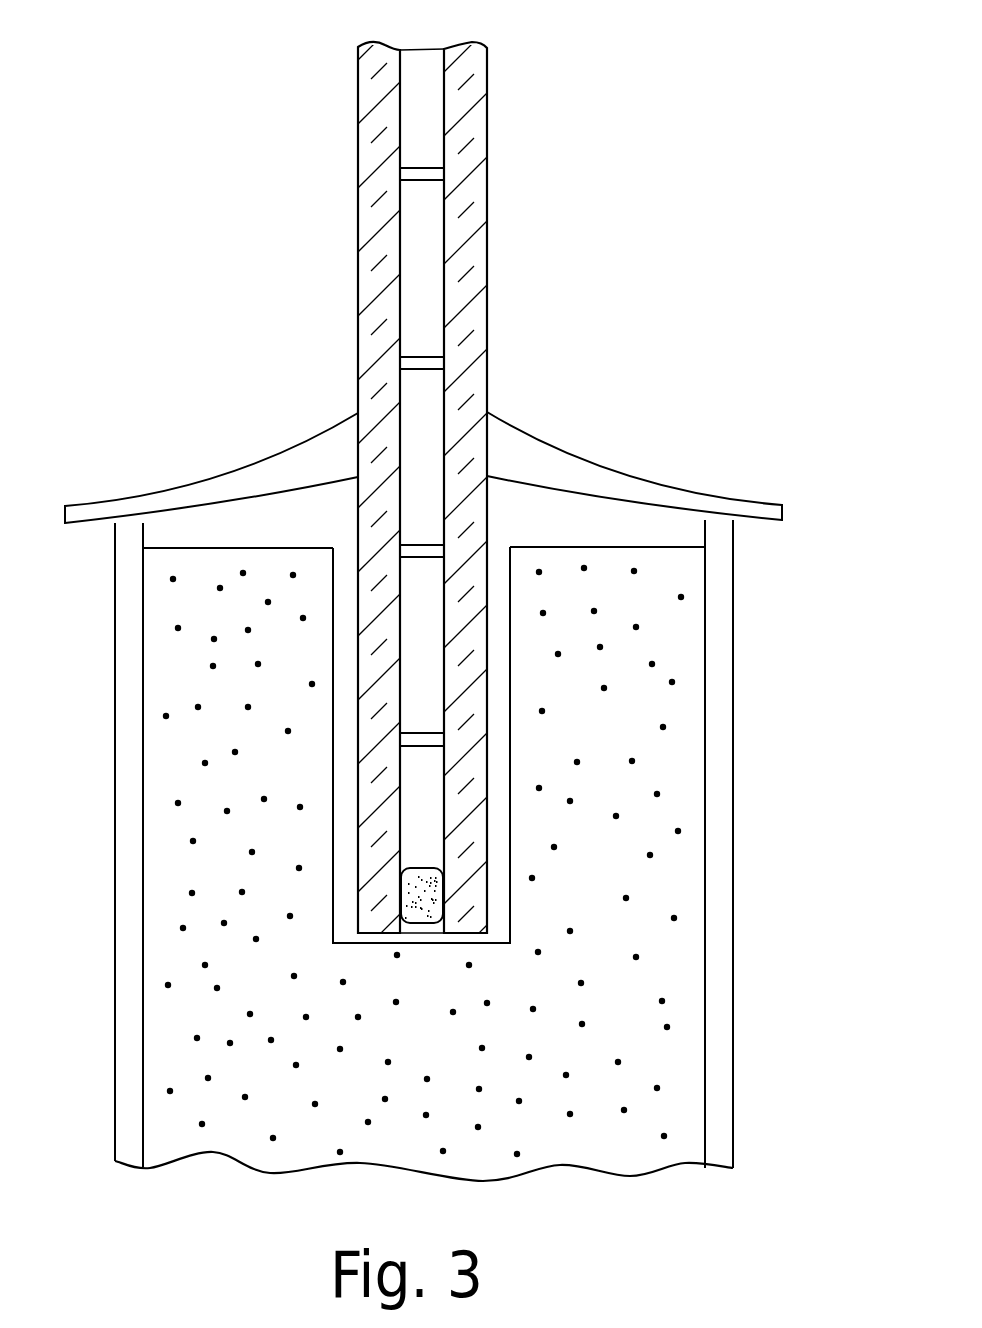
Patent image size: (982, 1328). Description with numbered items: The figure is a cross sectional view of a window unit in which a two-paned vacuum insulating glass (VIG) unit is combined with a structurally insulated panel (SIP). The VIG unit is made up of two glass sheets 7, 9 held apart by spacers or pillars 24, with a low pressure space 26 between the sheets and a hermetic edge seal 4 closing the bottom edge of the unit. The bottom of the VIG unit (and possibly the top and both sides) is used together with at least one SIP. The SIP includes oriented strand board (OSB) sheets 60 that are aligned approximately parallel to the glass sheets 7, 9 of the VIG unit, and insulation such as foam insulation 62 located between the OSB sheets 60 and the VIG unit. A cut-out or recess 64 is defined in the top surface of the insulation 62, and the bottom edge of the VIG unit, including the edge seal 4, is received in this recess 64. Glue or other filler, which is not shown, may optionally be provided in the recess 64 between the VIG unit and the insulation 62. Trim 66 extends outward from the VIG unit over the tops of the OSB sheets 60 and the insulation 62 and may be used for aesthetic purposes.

The hermetic edge seal 4 is at (422, 912).
The glass sheet 7 is at (458, 222).
The glass sheet 9 is at (377, 209).
The spacers or pillars 24 is at (418, 166).
The low pressure space 26 is at (413, 423).
The oriented strand board sheets 60 is at (128, 679).
The foam insulation 62 is at (597, 727).
The cut-out or recess 64 is at (497, 557).
The trim 66 is at (258, 478).